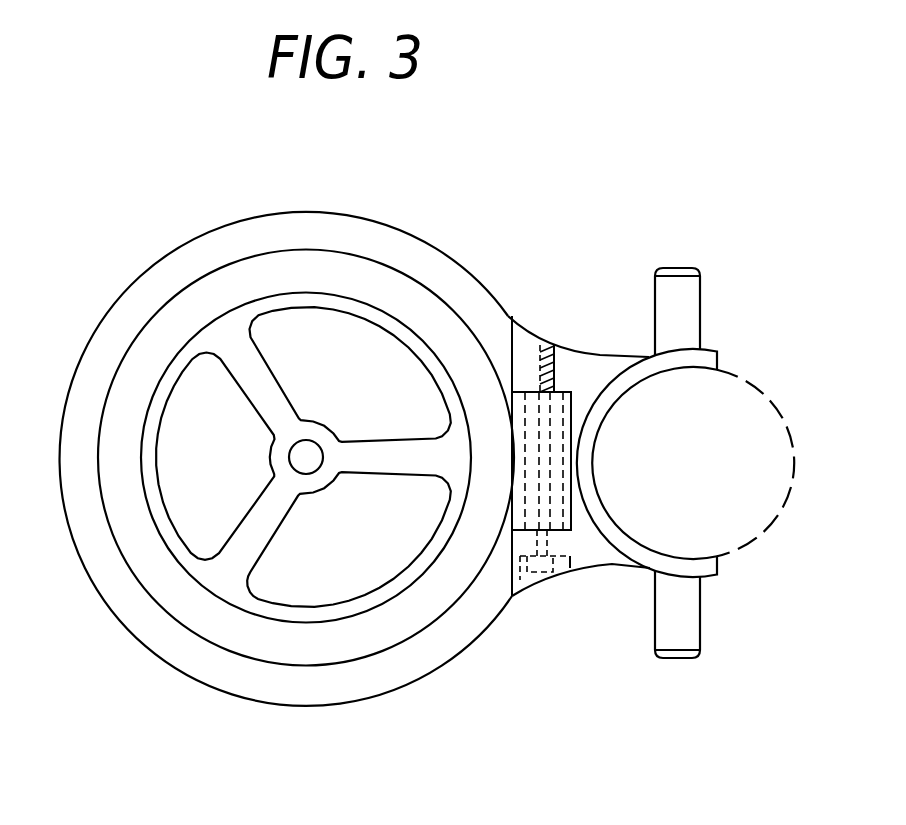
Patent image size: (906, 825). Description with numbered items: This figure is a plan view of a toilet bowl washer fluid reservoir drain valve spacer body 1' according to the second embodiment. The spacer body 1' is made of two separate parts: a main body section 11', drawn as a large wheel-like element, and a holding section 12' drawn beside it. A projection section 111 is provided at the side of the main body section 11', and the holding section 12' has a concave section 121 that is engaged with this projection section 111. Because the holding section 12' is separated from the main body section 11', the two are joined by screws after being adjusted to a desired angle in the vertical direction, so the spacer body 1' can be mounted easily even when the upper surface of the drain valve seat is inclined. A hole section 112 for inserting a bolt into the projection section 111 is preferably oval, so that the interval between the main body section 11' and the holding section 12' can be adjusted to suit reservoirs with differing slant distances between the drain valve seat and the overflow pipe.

The spacer body 1' is at (386, 419).
The main body section 11' is at (306, 393).
The holding section 12' is at (724, 460).
The projection section 111 is at (573, 512).
The hole section 112 is at (524, 432).
The concave section 121 is at (565, 418).